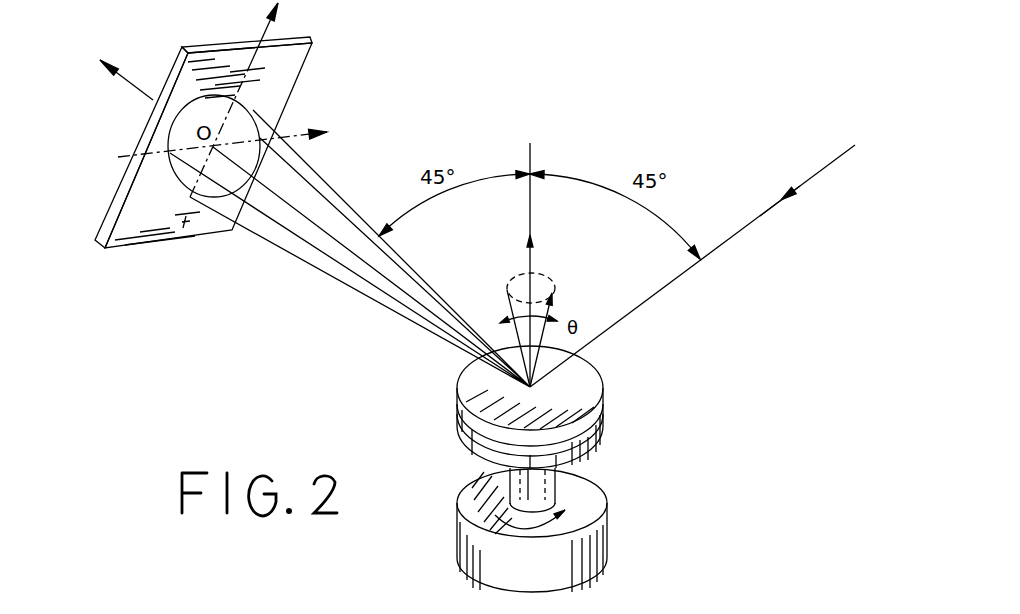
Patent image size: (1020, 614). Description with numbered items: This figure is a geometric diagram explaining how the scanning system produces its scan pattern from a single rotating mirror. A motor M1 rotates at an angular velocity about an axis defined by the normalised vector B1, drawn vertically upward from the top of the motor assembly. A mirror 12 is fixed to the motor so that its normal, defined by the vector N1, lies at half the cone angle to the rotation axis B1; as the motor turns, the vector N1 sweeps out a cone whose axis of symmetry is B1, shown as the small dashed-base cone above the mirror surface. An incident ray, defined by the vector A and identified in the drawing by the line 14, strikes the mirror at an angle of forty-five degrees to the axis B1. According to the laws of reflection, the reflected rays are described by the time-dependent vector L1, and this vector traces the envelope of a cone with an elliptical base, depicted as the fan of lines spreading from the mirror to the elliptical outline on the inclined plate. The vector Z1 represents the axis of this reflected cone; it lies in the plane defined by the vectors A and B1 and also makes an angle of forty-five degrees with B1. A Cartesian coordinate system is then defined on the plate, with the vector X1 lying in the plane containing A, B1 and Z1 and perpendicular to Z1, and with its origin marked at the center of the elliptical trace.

The mirror 12 is at (585, 392).
The mirror 14 is at (708, 266).
The motor M1 is at (550, 577).
The incident ray vector A is at (886, 148).
The rotation axis vector B1 is at (576, 218).
The mirror normal vector N1 is at (597, 270).
The reflected ray vector L1 is at (320, 160).
The coordinate axis vector X1 is at (241, 100).
The cone axis vector Z1 is at (126, 71).